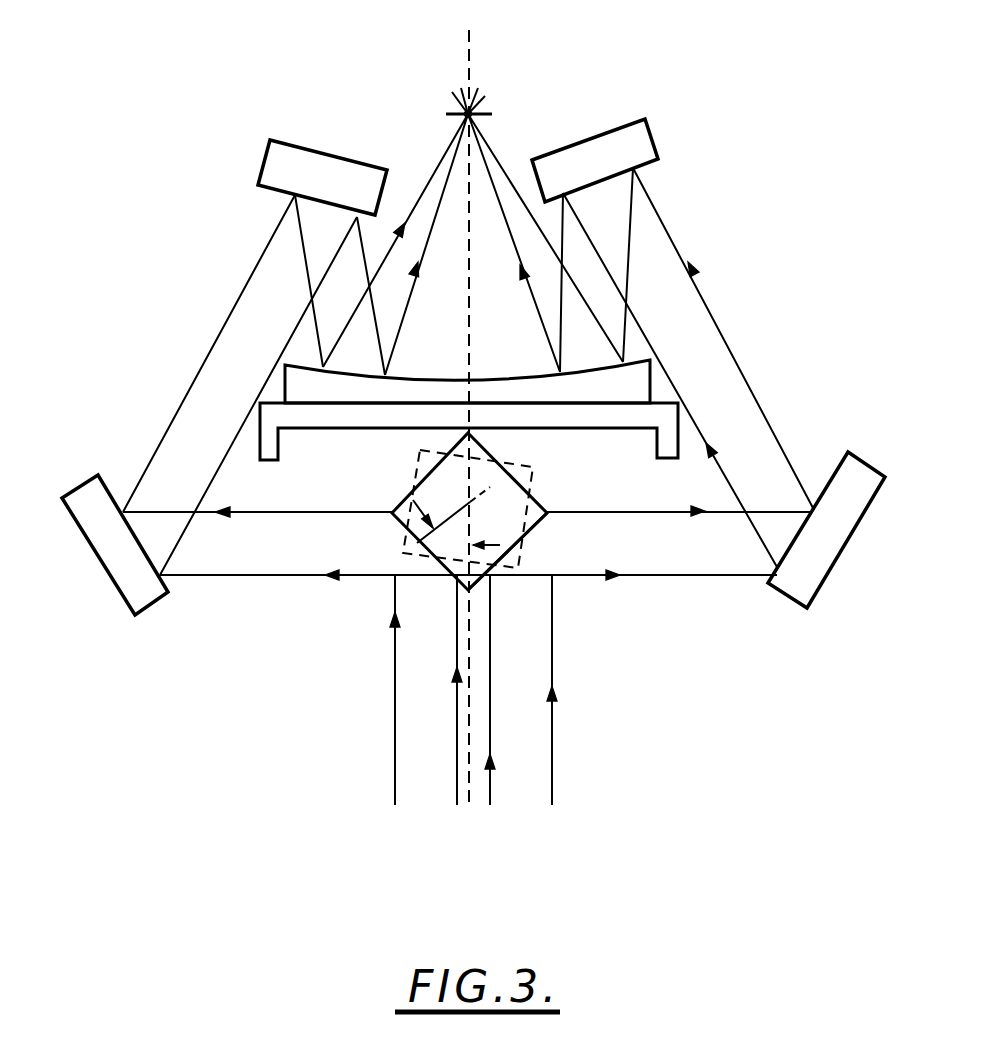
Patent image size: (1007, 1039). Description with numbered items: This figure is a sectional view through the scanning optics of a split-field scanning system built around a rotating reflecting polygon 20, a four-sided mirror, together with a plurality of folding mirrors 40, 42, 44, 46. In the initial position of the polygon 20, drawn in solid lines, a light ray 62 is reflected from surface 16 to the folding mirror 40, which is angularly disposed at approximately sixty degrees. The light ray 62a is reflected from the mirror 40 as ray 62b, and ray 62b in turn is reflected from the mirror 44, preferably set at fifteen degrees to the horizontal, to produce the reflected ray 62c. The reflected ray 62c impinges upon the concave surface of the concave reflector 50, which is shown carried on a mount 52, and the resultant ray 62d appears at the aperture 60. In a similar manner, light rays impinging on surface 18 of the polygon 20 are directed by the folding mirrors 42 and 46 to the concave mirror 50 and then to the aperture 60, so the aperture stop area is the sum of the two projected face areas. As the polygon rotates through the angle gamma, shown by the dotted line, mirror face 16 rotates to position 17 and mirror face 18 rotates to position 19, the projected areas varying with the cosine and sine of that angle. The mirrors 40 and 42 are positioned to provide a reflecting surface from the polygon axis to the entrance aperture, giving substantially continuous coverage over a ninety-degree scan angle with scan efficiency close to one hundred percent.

The surface 16 is at (413, 540).
The position 17 is at (415, 478).
The surface 18 is at (535, 527).
The position 19 is at (425, 562).
The polygon 20 is at (532, 490).
The folding mirror 40 is at (100, 570).
The folding mirror 42 is at (844, 548).
The folding mirror 44 is at (332, 158).
The folding mirror 46 is at (594, 136).
The concave reflector 50 is at (425, 368).
The lens mount 52 is at (310, 430).
The aperture 60 is at (470, 112).
The light ray 62 is at (395, 700).
The light ray 62a is at (247, 535).
The ray 62b is at (225, 328).
The reflected ray 62c is at (302, 245).
The resultant ray 62d is at (436, 143).